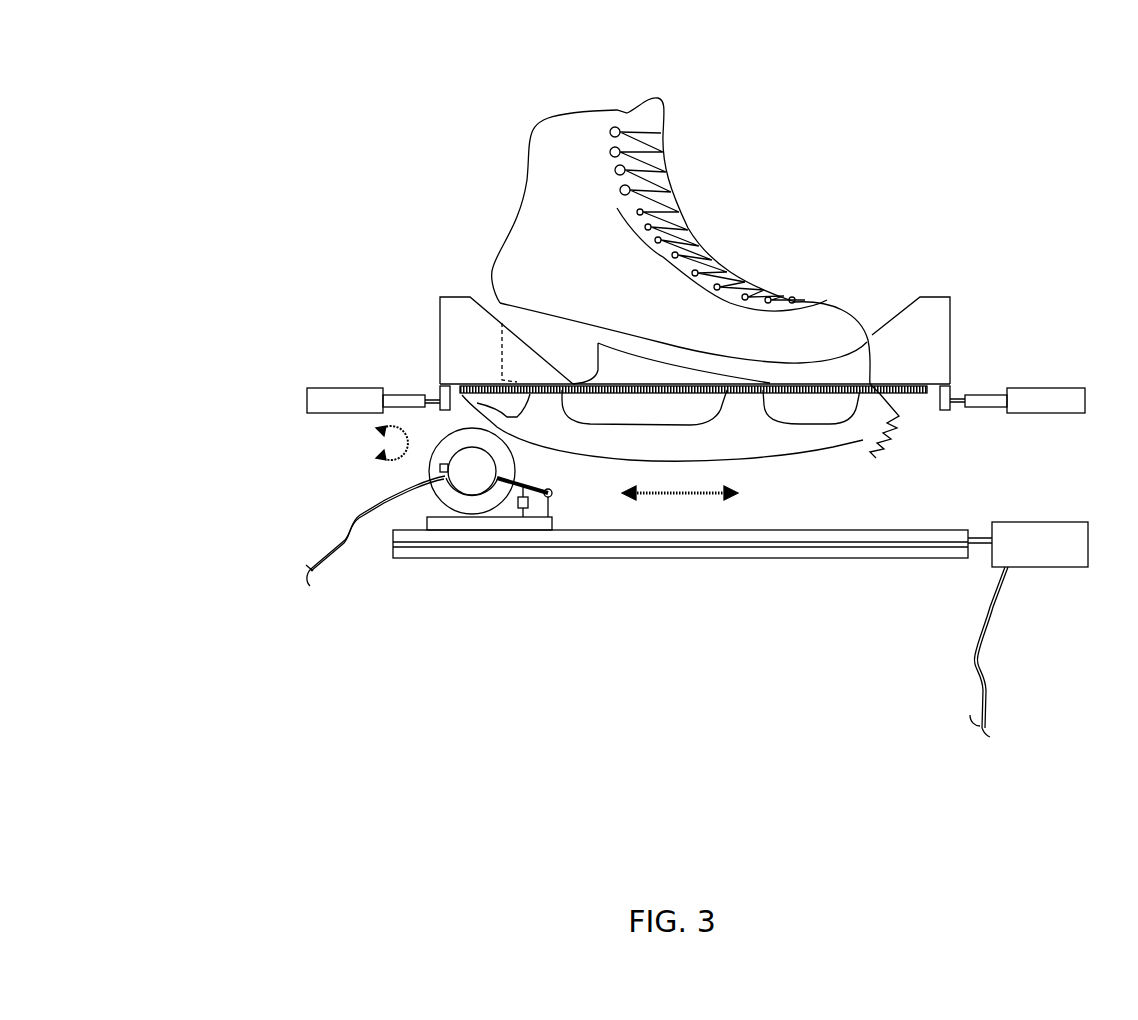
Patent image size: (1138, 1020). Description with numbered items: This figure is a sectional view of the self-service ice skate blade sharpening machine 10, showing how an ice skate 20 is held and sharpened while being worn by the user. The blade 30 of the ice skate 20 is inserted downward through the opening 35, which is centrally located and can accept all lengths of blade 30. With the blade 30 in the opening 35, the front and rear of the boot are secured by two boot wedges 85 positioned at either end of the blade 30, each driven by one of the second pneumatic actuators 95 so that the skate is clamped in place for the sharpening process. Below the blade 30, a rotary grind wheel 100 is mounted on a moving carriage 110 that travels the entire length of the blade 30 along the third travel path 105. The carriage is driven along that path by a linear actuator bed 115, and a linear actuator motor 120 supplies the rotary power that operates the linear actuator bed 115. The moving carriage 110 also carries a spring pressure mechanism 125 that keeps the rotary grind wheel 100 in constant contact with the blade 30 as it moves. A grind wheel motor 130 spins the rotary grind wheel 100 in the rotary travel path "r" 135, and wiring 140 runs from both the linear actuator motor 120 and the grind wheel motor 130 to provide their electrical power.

The self-service ice skate blade sharpening machine 10 is at (320, 177).
The ice skate 20 is at (610, 277).
The blade 30 is at (670, 447).
The opening 35 is at (660, 390).
The boot wedges 85 is at (457, 365).
The second pneumatic actuators 95 is at (352, 402).
The rotary grind wheel 100 is at (458, 505).
The third travel path 105 is at (690, 497).
The moving carriage 110 is at (483, 522).
The linear actuator bed 115 is at (750, 535).
The linear actuator motor 120 is at (1028, 542).
The spring pressure mechanism 125 is at (523, 517).
The grind wheel motor 130 is at (437, 469).
The rotary travel path "r" 135 is at (372, 445).
The wiring 140 is at (333, 543).